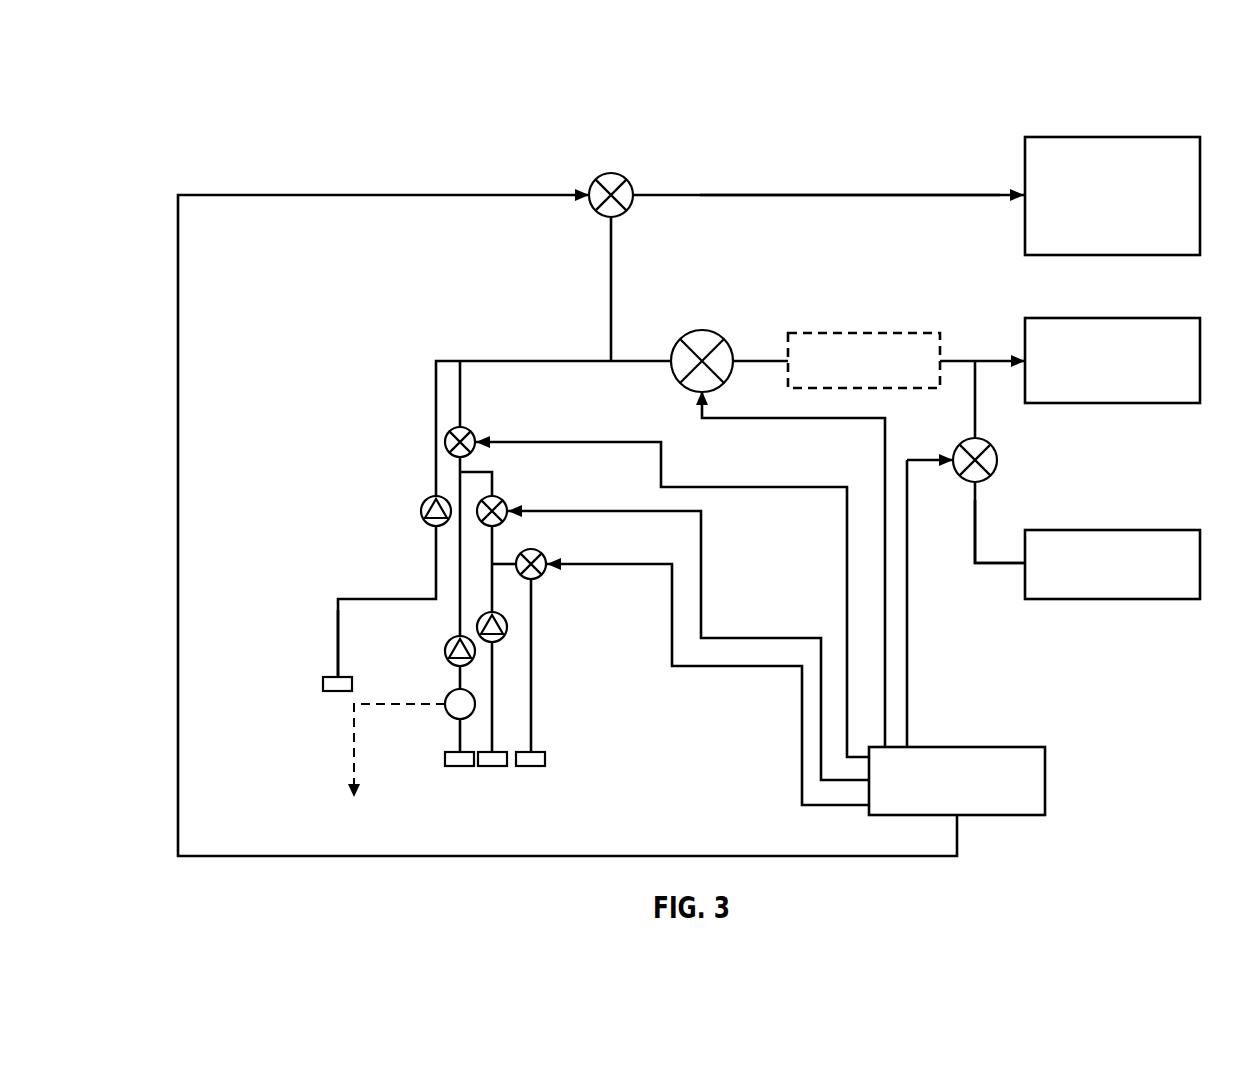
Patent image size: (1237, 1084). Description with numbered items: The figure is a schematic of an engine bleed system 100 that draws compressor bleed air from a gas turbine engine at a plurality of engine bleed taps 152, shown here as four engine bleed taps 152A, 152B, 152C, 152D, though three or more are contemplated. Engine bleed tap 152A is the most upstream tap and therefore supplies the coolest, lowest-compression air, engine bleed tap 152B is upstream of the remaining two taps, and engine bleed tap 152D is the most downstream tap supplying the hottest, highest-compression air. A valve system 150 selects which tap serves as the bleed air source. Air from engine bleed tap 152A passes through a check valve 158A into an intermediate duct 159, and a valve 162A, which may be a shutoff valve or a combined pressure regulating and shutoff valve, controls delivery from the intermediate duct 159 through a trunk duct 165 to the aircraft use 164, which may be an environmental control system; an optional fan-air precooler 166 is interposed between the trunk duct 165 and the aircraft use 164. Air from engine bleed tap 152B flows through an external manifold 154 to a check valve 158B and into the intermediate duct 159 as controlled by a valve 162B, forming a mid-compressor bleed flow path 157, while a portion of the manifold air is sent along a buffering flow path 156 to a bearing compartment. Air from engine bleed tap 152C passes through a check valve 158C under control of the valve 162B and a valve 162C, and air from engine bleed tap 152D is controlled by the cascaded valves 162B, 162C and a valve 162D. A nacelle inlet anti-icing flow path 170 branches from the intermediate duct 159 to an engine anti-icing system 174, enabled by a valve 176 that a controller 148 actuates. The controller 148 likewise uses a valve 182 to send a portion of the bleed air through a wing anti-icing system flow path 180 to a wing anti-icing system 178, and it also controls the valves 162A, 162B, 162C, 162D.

The engine bleed system 100 is at (333, 110).
The controller 148 is at (1005, 747).
The valve system 150 is at (418, 323).
The engine bleed taps 152 is at (322, 660).
The engine bleed tap 152A is at (322, 687).
The engine bleed tap 152B is at (457, 768).
The engine bleed tap 152C is at (495, 768).
The engine bleed tap 152D is at (537, 752).
The external manifold 154 is at (446, 695).
The buffering flow path 156 is at (345, 757).
The mid-compressor bleed flow path 157 is at (458, 567).
The check valve 158A is at (422, 506).
The check valve 158B is at (445, 648).
The check valve 158C is at (505, 625).
The intermediate duct 159 is at (557, 360).
The valve 162A is at (700, 330).
The valve 162B is at (470, 428).
The valve 162C is at (502, 498).
The valve 162D is at (540, 551).
The aircraft use 164 is at (1159, 318).
The trunk duct 165 is at (753, 358).
The fan-air precooler 166 is at (888, 333).
The nacelle inlet anti-icing flow path 170 is at (851, 194).
The engine anti-icing system 174 is at (1159, 136).
The valve 176 is at (601, 176).
The wing anti-icing system 178 is at (1160, 530).
The wing anti-icing system flow path 180 is at (985, 560).
The valve 182 is at (996, 456).